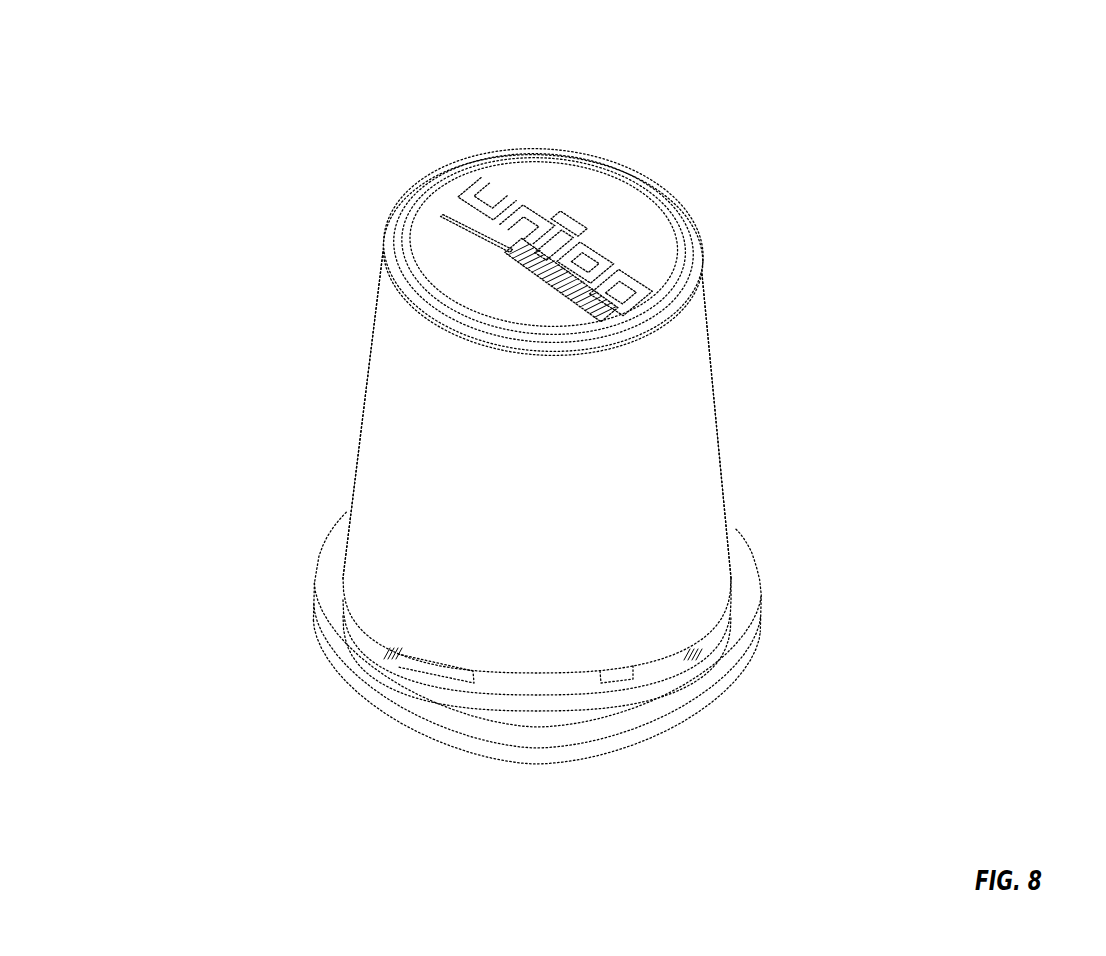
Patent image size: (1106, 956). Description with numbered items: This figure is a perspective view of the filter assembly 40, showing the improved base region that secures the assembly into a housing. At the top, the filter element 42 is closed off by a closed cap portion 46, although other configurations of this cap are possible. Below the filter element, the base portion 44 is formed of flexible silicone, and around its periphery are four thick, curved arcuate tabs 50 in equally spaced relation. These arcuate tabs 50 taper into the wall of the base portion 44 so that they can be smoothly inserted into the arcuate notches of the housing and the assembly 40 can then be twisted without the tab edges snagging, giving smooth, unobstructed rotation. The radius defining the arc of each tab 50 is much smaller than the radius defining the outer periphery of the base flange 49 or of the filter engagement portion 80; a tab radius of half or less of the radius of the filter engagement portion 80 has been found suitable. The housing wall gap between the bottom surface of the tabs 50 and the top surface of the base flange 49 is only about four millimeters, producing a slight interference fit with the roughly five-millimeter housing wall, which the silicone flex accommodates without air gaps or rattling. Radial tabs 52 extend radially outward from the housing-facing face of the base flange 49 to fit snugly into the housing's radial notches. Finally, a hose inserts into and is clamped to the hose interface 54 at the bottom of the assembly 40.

The filter assembly 40 is at (828, 237).
The filter element 42 is at (395, 412).
The base portion 44 is at (808, 663).
The closed cap portion 46 is at (547, 173).
The base flange 49 is at (343, 628).
The arcuate tabs 50 is at (633, 670).
The radial tabs 52 is at (687, 665).
The hose interface 54 is at (485, 737).
The filter engagement portion 80 is at (737, 581).